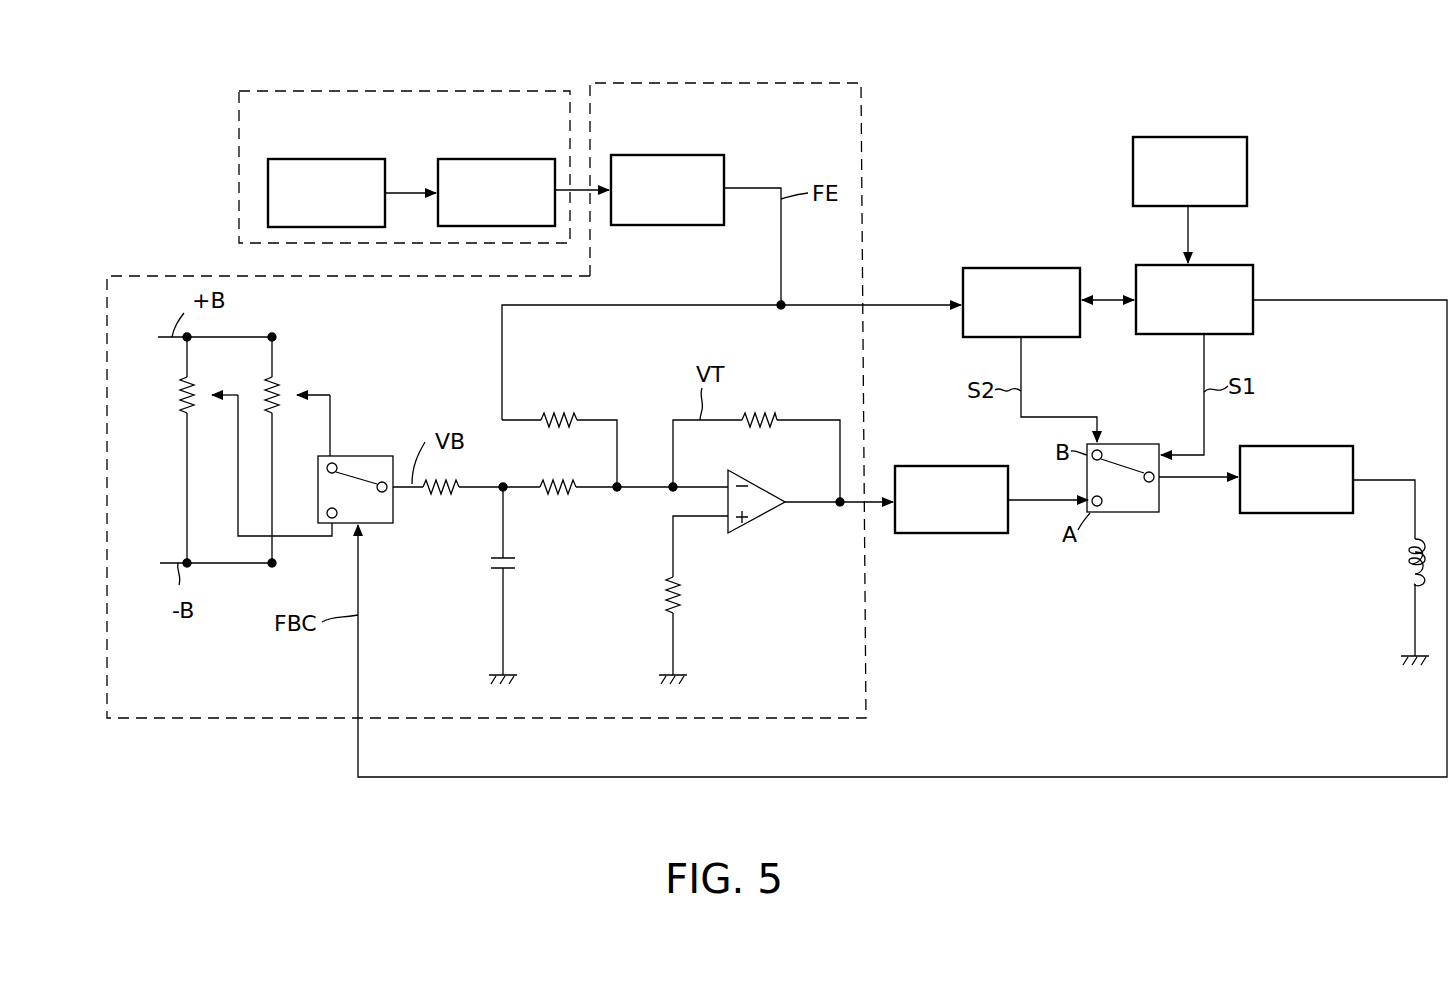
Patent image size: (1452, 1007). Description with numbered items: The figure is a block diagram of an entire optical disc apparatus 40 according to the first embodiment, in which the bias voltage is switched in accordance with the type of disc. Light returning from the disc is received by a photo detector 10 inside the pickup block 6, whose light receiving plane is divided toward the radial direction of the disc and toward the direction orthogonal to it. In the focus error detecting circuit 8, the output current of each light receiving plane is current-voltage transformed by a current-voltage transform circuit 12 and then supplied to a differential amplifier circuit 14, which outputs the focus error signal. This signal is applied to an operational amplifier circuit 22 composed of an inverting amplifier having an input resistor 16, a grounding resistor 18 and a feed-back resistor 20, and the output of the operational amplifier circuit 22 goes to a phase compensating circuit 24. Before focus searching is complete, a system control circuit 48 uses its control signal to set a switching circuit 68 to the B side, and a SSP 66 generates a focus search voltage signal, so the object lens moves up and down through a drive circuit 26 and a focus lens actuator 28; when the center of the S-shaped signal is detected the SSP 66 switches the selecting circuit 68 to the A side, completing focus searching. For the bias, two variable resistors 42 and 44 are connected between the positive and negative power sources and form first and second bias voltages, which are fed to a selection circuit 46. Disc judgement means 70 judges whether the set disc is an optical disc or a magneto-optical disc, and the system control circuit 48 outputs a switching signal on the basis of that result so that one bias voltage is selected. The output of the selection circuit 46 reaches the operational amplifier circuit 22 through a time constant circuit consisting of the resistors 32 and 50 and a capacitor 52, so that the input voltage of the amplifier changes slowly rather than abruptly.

The optical pickup 6 is at (439, 91).
The focus error detecting circuit 8 is at (758, 83).
The photo detector 10 is at (340, 159).
The current-voltage transform circuit 12 is at (505, 159).
The differential amplifier circuit 14 is at (671, 155).
The input resistor 16 is at (566, 416).
The grounding resistor 18 is at (668, 589).
The feed-back resistor 20 is at (766, 416).
The operational amplifier circuit 22 is at (766, 516).
The phase compensating circuit 24 is at (955, 534).
The drive circuit 26 is at (1288, 514).
The focus lens actuator 28 is at (1405, 570).
The resistor 32 is at (561, 497).
The optical disc apparatus 40 is at (1009, 86).
The variable resistor 42 is at (182, 413).
The variable resistor 44 is at (280, 380).
The selection circuit 46 is at (378, 524).
The system control circuit 48 is at (1242, 265).
The resistor 50 is at (442, 497).
The capacitor 52 is at (497, 571).
The SSP (signal servo control processor) 66 is at (1022, 268).
The switching circuit 68 is at (1133, 513).
The disc judgement means 70 is at (1190, 137).